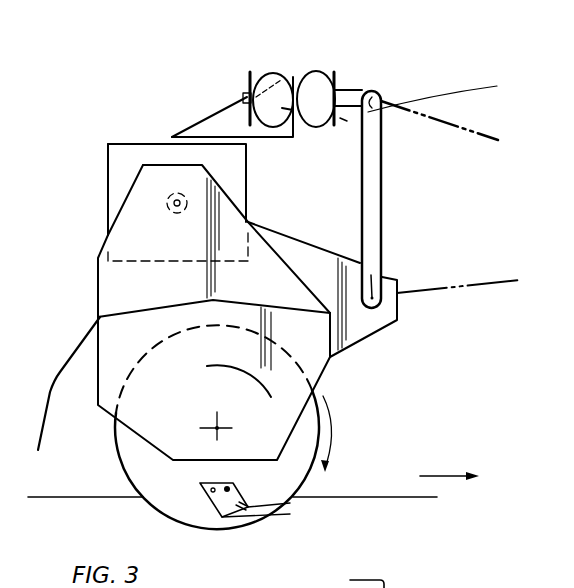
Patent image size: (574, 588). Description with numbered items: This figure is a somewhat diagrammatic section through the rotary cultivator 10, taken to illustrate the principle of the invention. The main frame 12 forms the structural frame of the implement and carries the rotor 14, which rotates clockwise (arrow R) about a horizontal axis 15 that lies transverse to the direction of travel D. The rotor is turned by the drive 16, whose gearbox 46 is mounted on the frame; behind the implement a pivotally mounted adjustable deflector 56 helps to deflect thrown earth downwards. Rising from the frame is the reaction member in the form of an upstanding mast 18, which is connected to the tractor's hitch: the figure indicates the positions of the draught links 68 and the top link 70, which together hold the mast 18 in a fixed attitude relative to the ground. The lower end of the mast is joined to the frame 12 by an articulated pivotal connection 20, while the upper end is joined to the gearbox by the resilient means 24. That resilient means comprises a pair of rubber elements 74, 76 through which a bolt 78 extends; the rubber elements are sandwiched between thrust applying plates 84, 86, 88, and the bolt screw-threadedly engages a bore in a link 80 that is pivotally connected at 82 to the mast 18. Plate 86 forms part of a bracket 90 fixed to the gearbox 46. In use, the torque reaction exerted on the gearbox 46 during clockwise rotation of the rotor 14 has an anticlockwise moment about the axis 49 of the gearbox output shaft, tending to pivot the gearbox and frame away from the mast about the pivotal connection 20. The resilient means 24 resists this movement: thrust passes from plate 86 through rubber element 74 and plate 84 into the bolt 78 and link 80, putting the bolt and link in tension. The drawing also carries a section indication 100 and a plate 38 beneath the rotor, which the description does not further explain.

The rotary cultivator 10 is at (110, 85).
The main frame 12 is at (97, 270).
The rotor 14 is at (312, 393).
The horizontal axis 15 is at (214, 428).
The drive 16 is at (100, 164).
The mast 18 is at (383, 160).
The pivotal connection 20 is at (371, 275).
The resilient means 24 is at (349, 87).
The plate 38 is at (268, 513).
The gearbox 46 is at (120, 143).
The axis of the gearbox's output shaft 49 is at (168, 203).
The deflector 56 is at (38, 424).
The draught links 68 is at (490, 290).
The top link 70 is at (470, 128).
The rubber element 74 is at (273, 112).
The rubber element 76 is at (331, 60).
The bolt 78 is at (243, 99).
The link 80 is at (348, 92).
The pivotal connection of link to mast 82 is at (448, 94).
The thrust applying plate 84 is at (249, 72).
The thrust applying plate 86 is at (313, 88).
The thrust applying plate 88 is at (347, 121).
The bracket 90 is at (200, 124).
The section line 100 is at (510, 587).